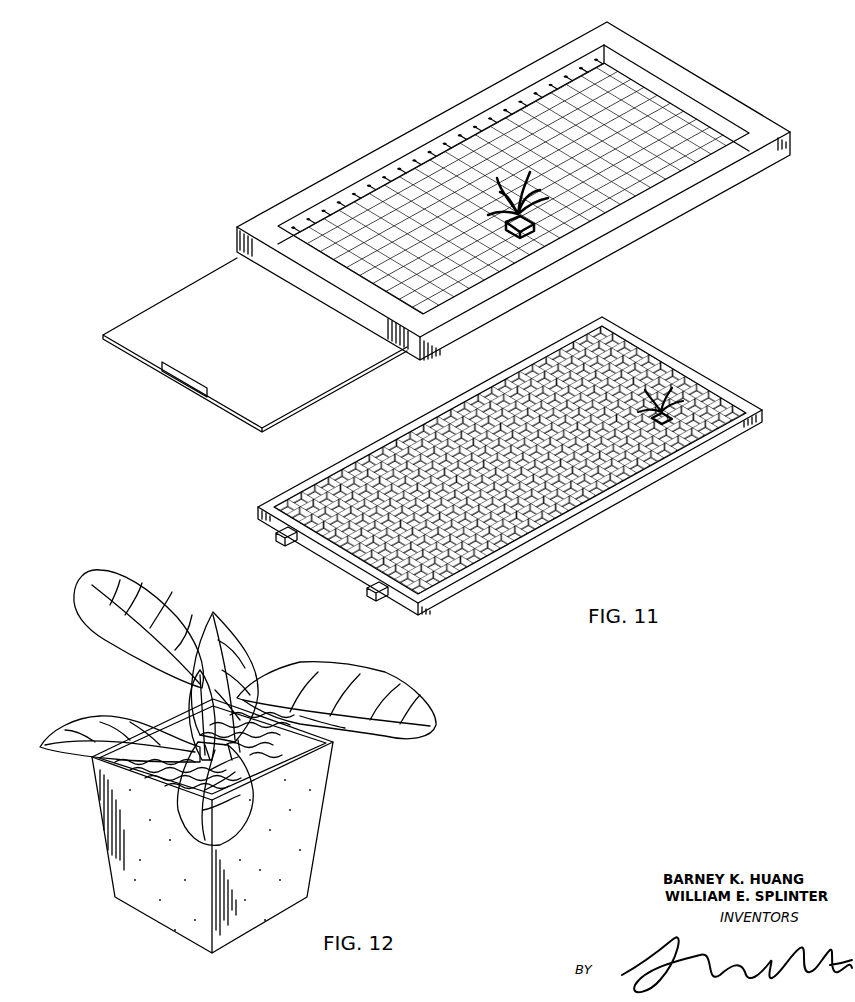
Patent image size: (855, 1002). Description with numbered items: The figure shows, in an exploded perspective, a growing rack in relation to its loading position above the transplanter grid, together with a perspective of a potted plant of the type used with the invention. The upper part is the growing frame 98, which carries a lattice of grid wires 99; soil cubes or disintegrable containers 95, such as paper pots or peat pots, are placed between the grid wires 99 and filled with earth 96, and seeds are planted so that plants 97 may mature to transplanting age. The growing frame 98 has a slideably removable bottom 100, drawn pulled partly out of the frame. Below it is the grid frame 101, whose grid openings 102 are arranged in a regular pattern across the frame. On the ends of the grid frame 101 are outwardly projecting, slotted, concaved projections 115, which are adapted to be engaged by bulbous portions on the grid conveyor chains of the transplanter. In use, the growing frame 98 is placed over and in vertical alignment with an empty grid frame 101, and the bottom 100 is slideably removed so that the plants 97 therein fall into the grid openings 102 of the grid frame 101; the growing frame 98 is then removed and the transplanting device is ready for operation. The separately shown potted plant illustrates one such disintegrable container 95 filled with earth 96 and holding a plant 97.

In FIG. 12, the disintegrable container 95 is at (303, 857).
In FIG. 12, the earth 96 is at (327, 760).
In FIG. 12, the plant 97 is at (333, 663).
In FIG. 11, the growing frame 98 is at (607, 247).
In FIG. 11, the grid wires 99 is at (398, 205).
In FIG. 11, the bottom 100 is at (173, 310).
In FIG. 11, the grid frame 101 is at (665, 473).
In FIG. 11, the grid openings 102 is at (680, 371).
In FIG. 11, the slotted concaved projection 115 is at (350, 567).